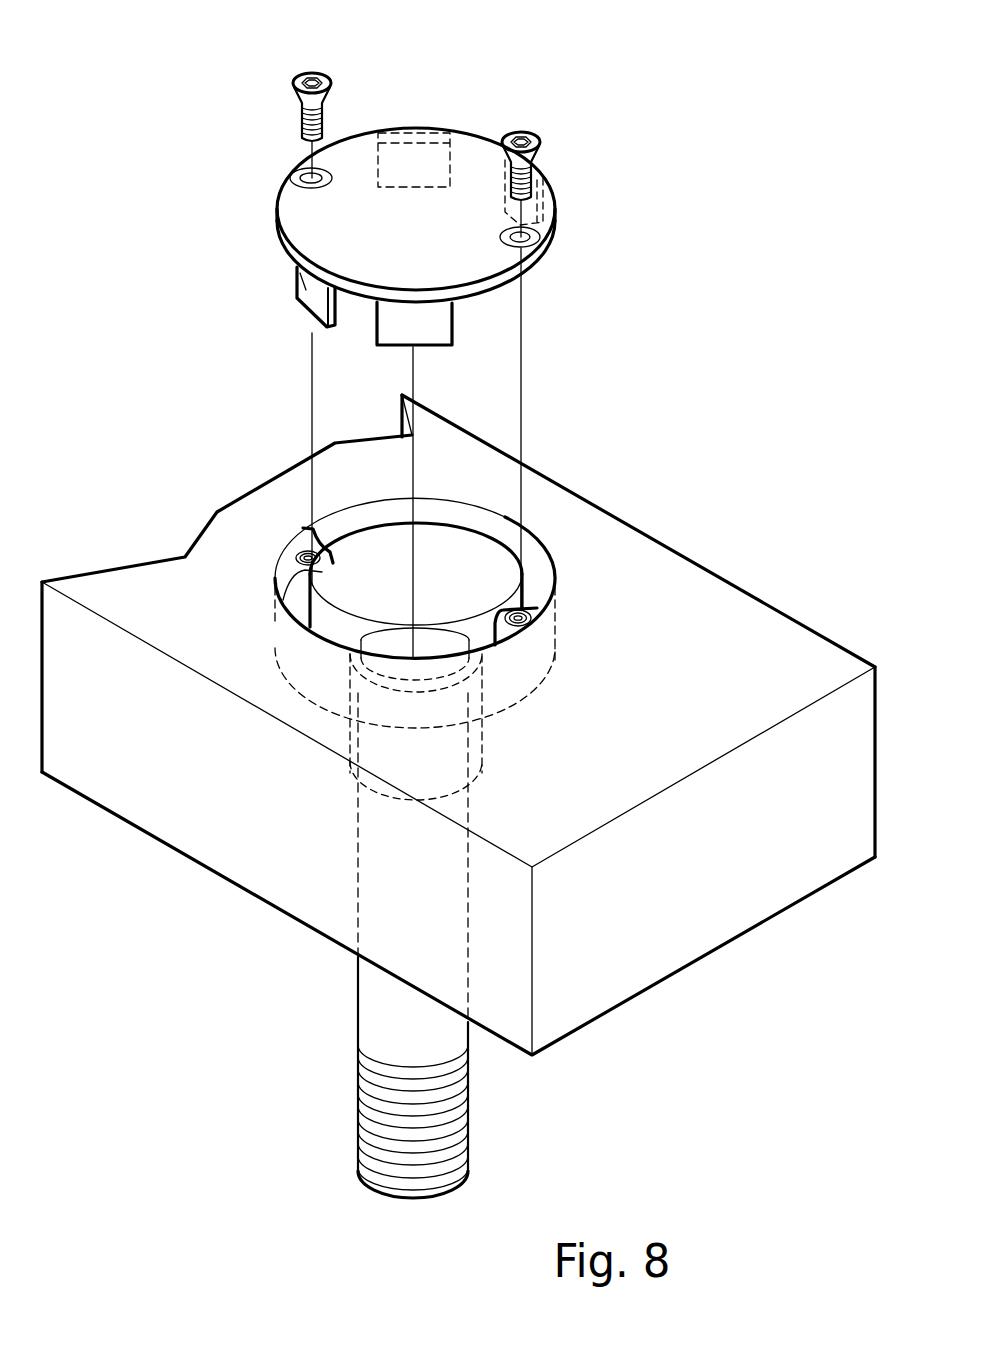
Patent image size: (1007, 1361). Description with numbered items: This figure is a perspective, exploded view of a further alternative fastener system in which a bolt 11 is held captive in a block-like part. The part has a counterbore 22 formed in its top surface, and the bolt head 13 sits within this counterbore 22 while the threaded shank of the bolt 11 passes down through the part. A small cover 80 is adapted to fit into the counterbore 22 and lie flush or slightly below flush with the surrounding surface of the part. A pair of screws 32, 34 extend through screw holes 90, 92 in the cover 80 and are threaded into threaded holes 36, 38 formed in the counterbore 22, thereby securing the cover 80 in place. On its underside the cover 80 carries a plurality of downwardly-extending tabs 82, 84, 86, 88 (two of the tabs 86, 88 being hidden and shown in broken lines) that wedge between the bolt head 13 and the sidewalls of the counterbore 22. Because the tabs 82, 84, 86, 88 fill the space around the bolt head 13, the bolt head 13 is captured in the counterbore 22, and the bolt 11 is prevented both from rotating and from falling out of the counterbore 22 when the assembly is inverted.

The bolt 11 is at (440, 912).
The bolt head 13 is at (378, 585).
The counterbore 22 is at (537, 573).
The screw 32 is at (527, 133).
The screw 34 is at (310, 72).
The threaded hole 36 is at (290, 567).
The threaded hole 38 is at (557, 610).
The cover 80 is at (470, 173).
The tab 82 is at (300, 302).
The tab 84 is at (437, 333).
The tab 86 is at (552, 222).
The tab 88 is at (402, 163).
The screw hole 90 is at (292, 172).
The screw hole 92 is at (550, 243).